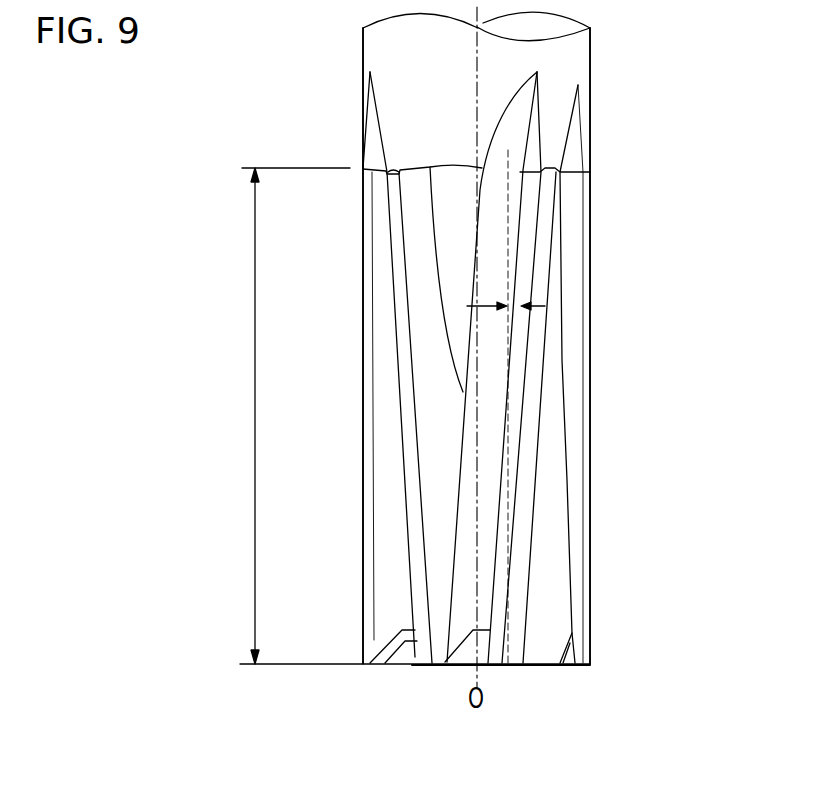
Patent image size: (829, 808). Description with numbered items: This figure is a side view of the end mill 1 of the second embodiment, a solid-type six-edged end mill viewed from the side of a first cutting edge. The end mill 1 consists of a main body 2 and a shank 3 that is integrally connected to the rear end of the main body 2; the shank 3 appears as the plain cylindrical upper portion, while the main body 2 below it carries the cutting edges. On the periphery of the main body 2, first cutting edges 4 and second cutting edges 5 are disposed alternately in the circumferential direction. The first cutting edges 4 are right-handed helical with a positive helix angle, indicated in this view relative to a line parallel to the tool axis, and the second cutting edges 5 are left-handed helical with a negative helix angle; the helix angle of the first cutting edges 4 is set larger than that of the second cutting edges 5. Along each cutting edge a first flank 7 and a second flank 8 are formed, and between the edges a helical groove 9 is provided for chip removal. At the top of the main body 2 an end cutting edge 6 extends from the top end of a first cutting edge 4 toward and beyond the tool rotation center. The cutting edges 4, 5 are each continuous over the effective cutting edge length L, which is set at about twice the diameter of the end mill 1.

The end mill 1 is at (600, 82).
The main body 2 is at (553, 142).
The shank 3 is at (507, 40).
The first cutting edge 4 is at (363, 503).
The second cutting edge 5 is at (412, 600).
The end cutting edge 6 is at (540, 665).
The first flank 7 is at (527, 243).
The second flank 8 is at (420, 338).
The helical groove 9 is at (450, 287).
The effective cutting edge length L is at (301, 416).